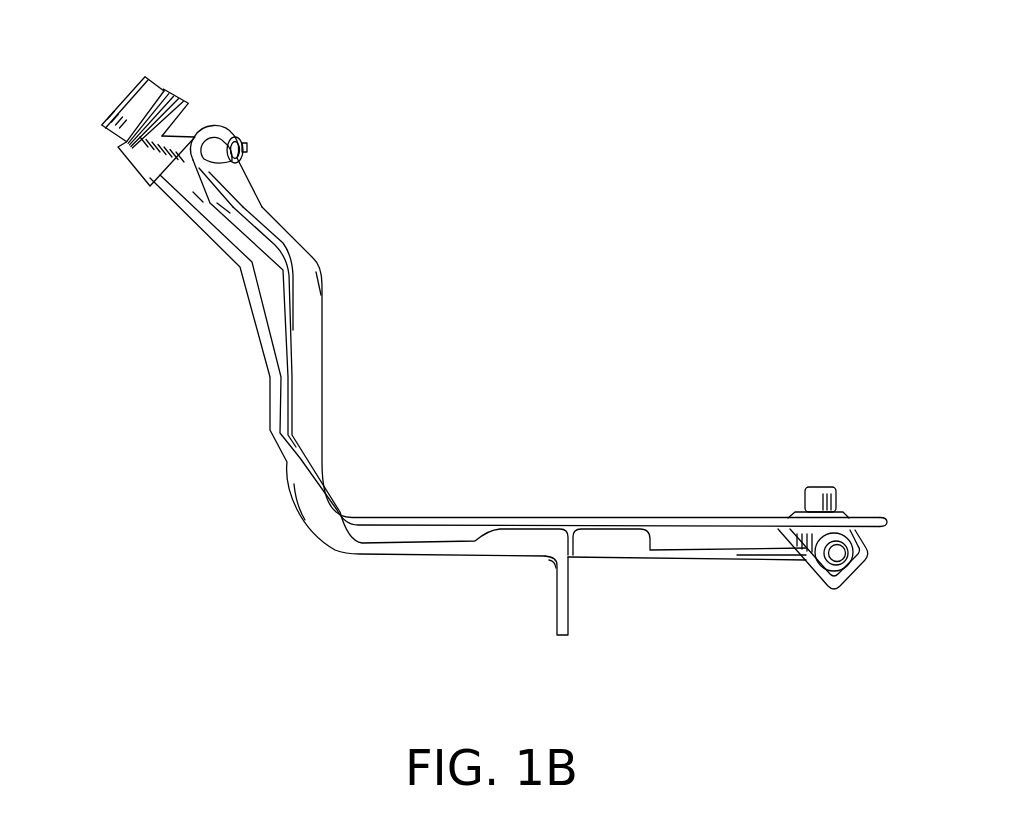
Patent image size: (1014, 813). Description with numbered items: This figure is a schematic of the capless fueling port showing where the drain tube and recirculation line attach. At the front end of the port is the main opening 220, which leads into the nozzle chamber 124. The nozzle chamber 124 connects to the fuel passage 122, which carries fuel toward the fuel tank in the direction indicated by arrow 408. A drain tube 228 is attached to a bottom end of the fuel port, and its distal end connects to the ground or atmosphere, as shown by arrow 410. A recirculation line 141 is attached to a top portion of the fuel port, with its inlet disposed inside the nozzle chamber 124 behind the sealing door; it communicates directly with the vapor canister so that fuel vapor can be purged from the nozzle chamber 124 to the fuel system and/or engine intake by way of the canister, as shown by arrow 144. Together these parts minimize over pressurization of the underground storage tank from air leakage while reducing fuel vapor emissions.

The main opening 220 is at (108, 88).
The nozzle chamber 124 is at (192, 120).
The drain tube 228 is at (119, 150).
The recirculation line 141 is at (236, 142).
The fuel passage 122 is at (322, 268).
The arrow 144 is at (918, 522).
The arrow 408 is at (826, 566).
The arrow 410 is at (562, 682).